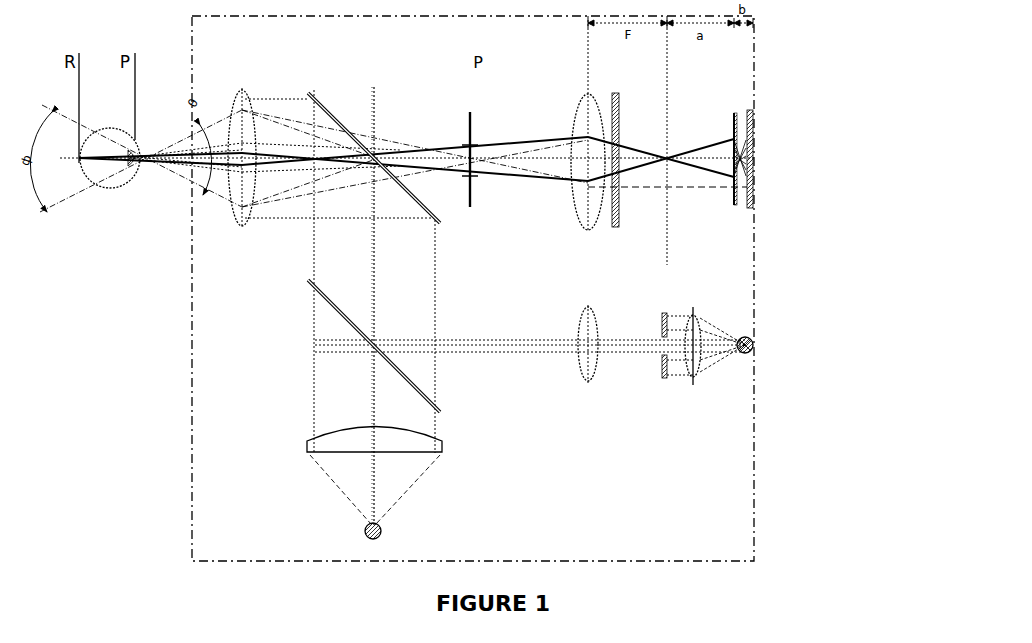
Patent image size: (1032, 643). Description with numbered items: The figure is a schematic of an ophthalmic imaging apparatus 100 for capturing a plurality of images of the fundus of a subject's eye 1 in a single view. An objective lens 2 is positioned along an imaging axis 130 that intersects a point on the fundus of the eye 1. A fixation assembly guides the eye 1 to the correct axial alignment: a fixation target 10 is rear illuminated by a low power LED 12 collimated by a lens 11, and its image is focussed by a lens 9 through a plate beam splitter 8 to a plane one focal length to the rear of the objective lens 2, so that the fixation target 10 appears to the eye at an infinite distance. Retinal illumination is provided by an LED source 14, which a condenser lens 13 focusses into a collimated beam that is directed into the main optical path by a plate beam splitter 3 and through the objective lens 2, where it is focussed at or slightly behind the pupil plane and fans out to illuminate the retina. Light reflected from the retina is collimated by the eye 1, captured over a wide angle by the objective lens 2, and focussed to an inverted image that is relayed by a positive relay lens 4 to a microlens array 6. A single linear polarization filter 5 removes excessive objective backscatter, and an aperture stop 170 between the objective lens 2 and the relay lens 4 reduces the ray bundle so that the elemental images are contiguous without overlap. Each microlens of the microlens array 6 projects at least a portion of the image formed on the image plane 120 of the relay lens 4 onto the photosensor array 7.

The ophthalmic imaging apparatus 100 is at (754, 253).
The eye 1 is at (101, 191).
The imaging axis 130 is at (193, 164).
The objective lens 2 is at (240, 228).
The plate beam splitter 3 is at (328, 102).
The aperture stop 170 is at (468, 128).
The relay lens 4 is at (576, 110).
The linear polarization filter 5 is at (621, 92).
The image plane 120 is at (671, 123).
The microlens array 6 is at (732, 204).
The photosensor array 7 is at (755, 121).
The plate beam splitter 8 is at (313, 292).
The lens 9 is at (589, 382).
The fixation target 10 is at (663, 380).
The lens 11 is at (699, 380).
The low power LED 12 is at (753, 349).
The condenser lens 13 is at (308, 440).
The LED source 14 is at (364, 528).